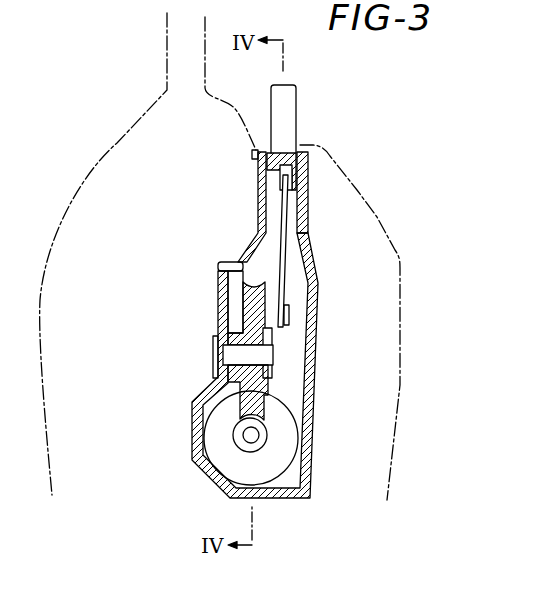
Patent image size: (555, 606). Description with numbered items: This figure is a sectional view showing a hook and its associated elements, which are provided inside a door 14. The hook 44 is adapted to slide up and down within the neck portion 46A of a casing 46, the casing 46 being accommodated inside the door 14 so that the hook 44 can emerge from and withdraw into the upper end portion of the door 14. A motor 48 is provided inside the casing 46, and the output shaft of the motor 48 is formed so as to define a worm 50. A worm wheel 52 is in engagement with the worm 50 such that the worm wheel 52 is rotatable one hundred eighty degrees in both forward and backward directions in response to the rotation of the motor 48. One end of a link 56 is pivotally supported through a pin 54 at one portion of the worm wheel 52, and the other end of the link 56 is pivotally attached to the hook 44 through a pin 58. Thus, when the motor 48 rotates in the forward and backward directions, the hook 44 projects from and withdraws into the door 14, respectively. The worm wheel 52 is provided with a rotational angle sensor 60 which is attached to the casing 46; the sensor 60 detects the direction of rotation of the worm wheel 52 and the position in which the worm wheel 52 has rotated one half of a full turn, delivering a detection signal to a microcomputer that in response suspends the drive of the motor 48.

The door 14 is at (345, 163).
The hook 44 is at (289, 122).
The casing 46 is at (315, 343).
The neck portion 46A is at (309, 203).
The motor 48 is at (289, 442).
The worm 50 is at (258, 449).
The worm wheel 52 is at (268, 410).
The pin 54 is at (290, 309).
The link 56 is at (284, 268).
The pin 58 is at (279, 180).
The rotational angle sensor 60 is at (233, 292).